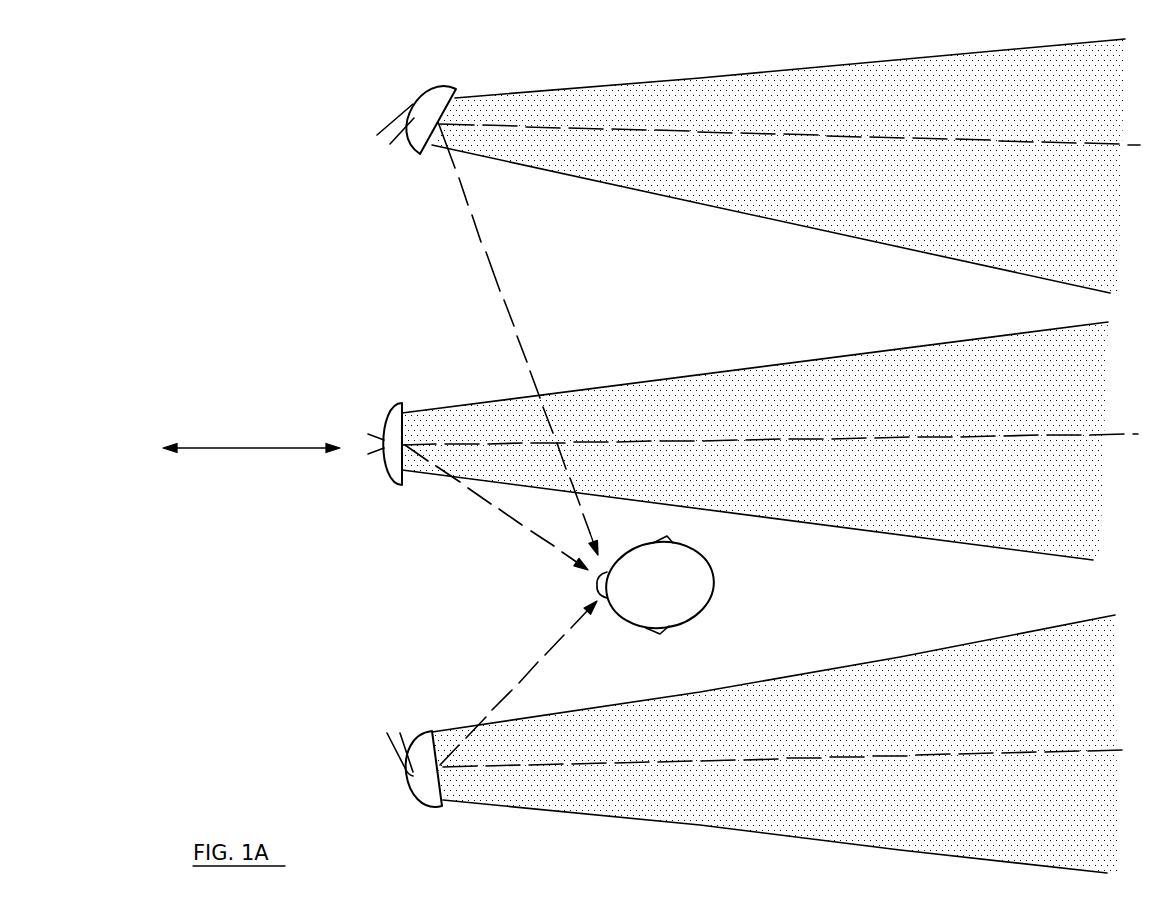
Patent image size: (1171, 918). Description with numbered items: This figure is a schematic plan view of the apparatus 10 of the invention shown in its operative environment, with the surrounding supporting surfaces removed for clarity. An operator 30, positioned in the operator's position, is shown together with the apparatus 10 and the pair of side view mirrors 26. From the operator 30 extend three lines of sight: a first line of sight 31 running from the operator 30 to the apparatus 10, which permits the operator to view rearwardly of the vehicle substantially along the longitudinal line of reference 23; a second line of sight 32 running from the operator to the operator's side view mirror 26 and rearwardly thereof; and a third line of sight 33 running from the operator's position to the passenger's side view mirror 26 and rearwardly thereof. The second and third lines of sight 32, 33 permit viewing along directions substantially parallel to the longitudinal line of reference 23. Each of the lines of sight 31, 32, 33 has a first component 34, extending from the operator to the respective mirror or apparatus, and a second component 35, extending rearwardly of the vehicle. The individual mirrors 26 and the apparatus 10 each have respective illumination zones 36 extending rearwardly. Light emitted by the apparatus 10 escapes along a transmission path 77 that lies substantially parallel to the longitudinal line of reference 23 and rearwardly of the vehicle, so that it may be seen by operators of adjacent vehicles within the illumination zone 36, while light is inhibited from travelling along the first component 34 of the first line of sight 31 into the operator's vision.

The apparatus 10 is at (393, 418).
The longitudinal line of reference 23 is at (230, 447).
The side view mirror 26 is at (437, 97).
The operator 30 is at (712, 558).
The first line of sight 31 is at (520, 535).
The second line of sight 32 is at (500, 690).
The third line of sight 33 is at (497, 308).
The first component 34 is at (495, 273).
The second component 35 is at (933, 138).
The illumination zone 36 is at (653, 95).
The transmission path 77 is at (775, 441).